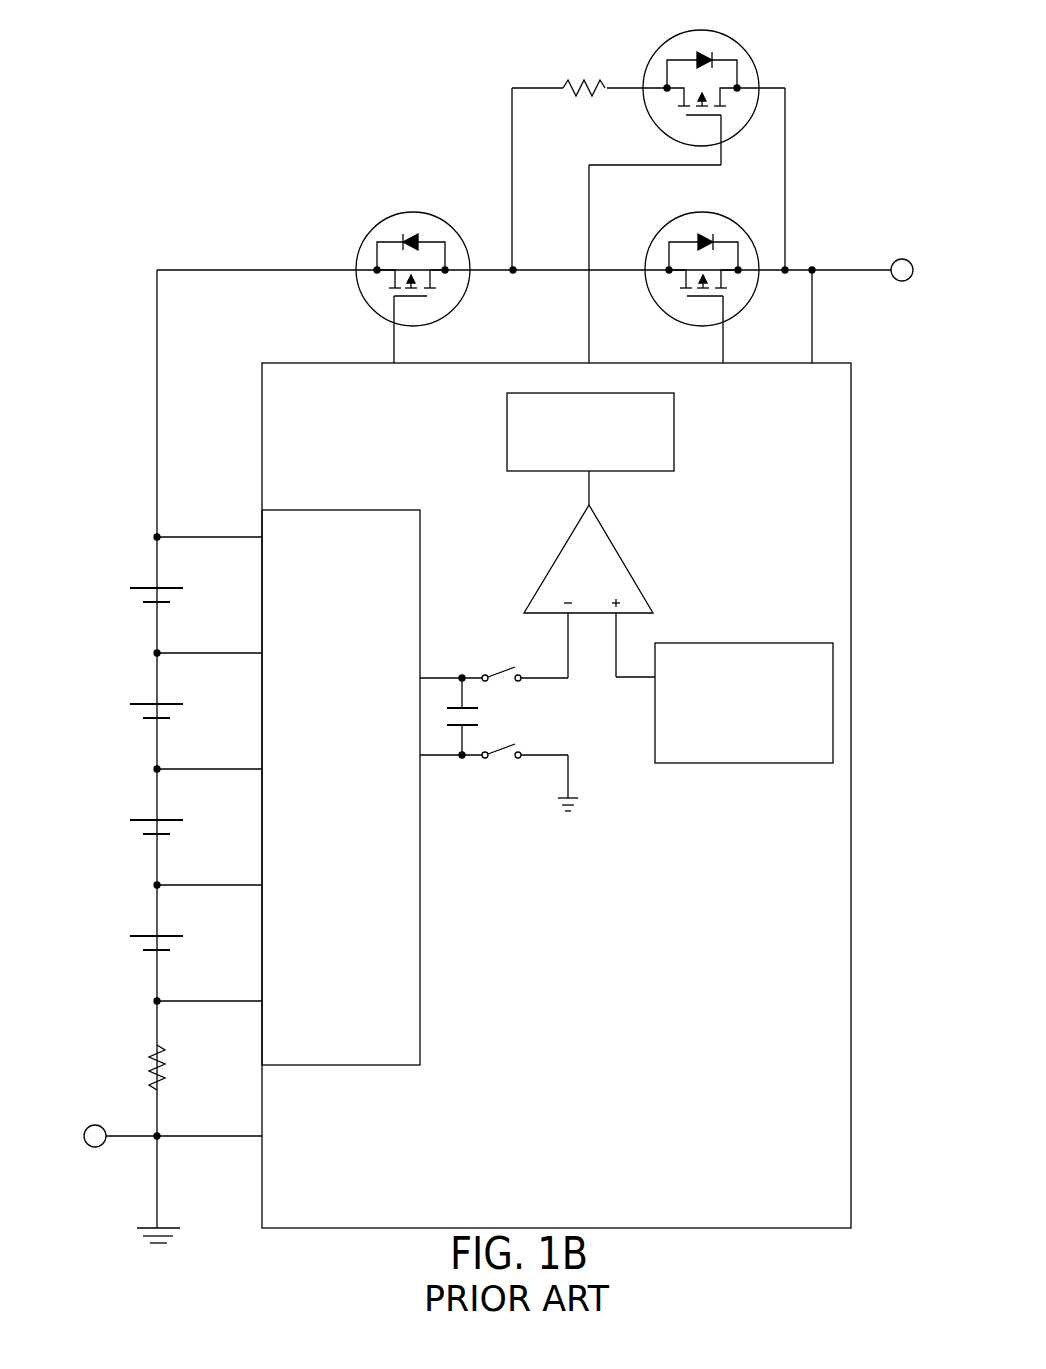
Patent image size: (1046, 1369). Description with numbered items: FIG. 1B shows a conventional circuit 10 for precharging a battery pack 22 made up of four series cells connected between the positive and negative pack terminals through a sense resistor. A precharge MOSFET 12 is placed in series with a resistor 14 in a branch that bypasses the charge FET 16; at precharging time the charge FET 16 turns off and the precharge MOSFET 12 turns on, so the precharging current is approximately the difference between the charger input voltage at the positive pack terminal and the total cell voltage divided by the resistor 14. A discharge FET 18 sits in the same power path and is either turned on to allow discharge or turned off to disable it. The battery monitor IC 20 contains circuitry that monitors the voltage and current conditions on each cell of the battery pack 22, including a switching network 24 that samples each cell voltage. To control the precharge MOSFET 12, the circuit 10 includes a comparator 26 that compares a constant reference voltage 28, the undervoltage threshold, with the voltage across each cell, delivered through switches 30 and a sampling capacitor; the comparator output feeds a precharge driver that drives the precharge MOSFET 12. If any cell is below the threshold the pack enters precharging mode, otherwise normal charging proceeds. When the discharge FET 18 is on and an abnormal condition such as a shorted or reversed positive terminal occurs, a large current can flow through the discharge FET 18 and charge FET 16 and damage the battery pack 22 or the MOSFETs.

The conventional circuit 10 is at (178, 177).
The precharge MOSFET 12 is at (760, 73).
The resistor 14 is at (565, 85).
The charge FET 16 is at (748, 303).
The discharge FET 18 is at (356, 255).
The battery monitor IC 20 is at (788, 961).
The battery pack 22 is at (90, 647).
The switching network 24 is at (420, 1021).
The comparator 26 is at (627, 563).
The constant reference voltage 28 is at (753, 643).
The switches 30 is at (501, 768).